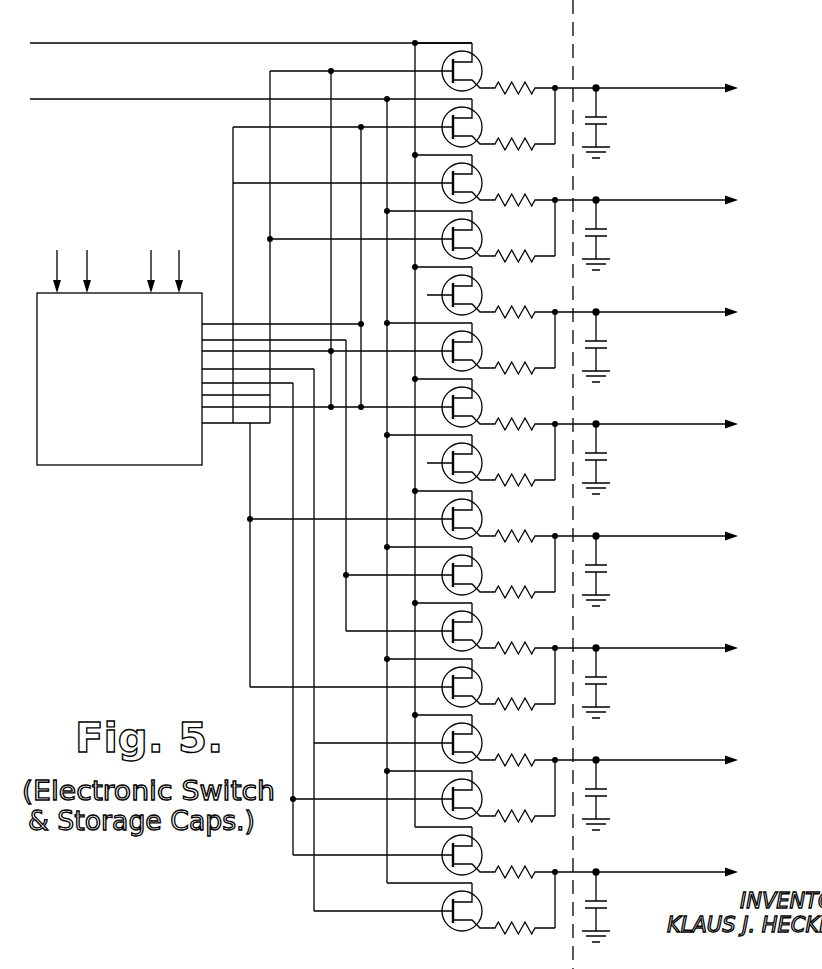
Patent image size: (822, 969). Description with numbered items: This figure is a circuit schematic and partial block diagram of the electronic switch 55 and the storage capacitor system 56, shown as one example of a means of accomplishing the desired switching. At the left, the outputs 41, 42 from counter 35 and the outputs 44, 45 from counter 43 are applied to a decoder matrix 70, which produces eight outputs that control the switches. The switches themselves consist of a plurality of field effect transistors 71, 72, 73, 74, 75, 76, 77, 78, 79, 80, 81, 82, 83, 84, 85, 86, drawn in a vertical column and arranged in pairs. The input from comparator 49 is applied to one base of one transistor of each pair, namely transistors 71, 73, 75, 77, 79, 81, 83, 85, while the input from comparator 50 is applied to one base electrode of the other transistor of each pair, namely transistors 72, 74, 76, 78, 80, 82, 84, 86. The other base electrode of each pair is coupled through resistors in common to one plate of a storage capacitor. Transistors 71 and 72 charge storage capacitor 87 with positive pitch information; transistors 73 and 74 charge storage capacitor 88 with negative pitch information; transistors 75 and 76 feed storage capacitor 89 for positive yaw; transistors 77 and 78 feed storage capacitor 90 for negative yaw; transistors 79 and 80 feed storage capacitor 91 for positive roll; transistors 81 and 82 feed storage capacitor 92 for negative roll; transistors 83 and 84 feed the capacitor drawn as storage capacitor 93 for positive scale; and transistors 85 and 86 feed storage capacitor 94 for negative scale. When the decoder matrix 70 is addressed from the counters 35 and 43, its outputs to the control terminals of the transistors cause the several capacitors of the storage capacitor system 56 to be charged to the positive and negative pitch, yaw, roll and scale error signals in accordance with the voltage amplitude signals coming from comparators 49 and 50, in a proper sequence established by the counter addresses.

The counter 35 is at (72, 222).
The counter 43 is at (170, 222).
The output from counter 41 is at (57, 265).
The output from counter 42 is at (87, 258).
The output from counter 44 is at (151, 265).
The output from counter 45 is at (179, 257).
The comparator 49 is at (251, 31).
The comparator 50 is at (251, 86).
The electronic switch 55 is at (493, 467).
The storage capacitor system 56 is at (646, 471).
The decoder matrix 70 is at (100, 466).
The field effect transistor 71 is at (491, 68).
The field effect transistor 72 is at (491, 124).
The field effect transistor 73 is at (491, 180).
The field effect transistor 74 is at (491, 236).
The field effect transistor 75 is at (491, 292).
The field effect transistor 76 is at (491, 348).
The field effect transistor 77 is at (491, 404).
The field effect transistor 78 is at (491, 460).
The field effect transistor 79 is at (491, 516).
The field effect transistor 80 is at (491, 572).
The field effect transistor 81 is at (491, 628).
The field effect transistor 82 is at (491, 684).
The field effect transistor 83 is at (491, 740).
The field effect transistor 84 is at (491, 796).
The field effect transistor 85 is at (491, 852).
The field effect transistor 86 is at (491, 908).
The storage capacitor 87 is at (637, 160).
The storage capacitor 88 is at (637, 272).
The storage capacitor 89 is at (609, 343).
The storage capacitor 90 is at (609, 455).
The storage capacitor 91 is at (609, 567).
The storage capacitor 92 is at (637, 716).
The storage capacitor 93 is at (609, 791).
The storage capacitor 94 is at (609, 903).